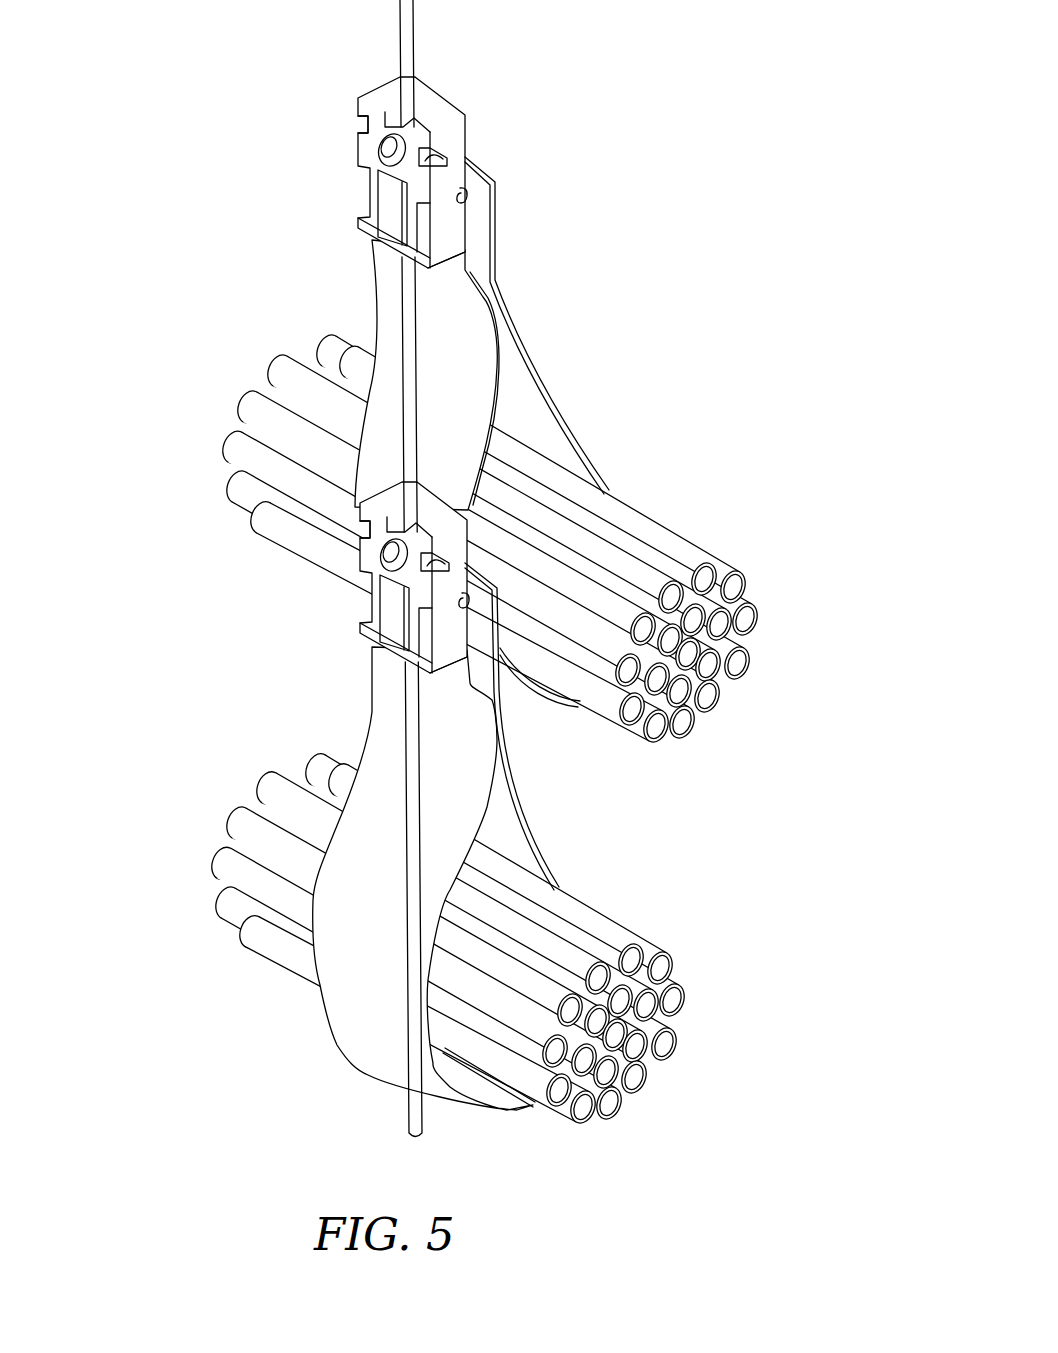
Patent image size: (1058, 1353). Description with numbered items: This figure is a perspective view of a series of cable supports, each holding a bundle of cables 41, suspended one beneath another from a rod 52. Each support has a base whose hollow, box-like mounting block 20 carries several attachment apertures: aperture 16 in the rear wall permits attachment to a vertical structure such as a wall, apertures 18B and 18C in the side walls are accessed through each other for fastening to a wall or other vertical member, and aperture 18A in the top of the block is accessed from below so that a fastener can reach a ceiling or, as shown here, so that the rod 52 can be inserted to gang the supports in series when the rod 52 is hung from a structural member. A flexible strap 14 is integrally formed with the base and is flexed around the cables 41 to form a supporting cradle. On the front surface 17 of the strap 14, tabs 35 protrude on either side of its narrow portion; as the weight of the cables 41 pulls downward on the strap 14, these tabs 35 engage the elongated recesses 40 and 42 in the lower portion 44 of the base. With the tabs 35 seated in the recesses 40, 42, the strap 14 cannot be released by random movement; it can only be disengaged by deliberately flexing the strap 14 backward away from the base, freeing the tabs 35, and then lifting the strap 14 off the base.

The strap 14 is at (536, 418).
The aperture 16 is at (383, 152).
The front surface 17 is at (471, 360).
The aperture 18A is at (394, 118).
The aperture 18B is at (358, 122).
The aperture 18C is at (446, 145).
The mounting block 20 is at (439, 110).
The tab 35 is at (462, 192).
The recess 40 is at (432, 225).
The cable 41 is at (517, 683).
The recess 42 is at (366, 200).
The lower portion 44 is at (433, 252).
The rod 52 is at (413, 20).